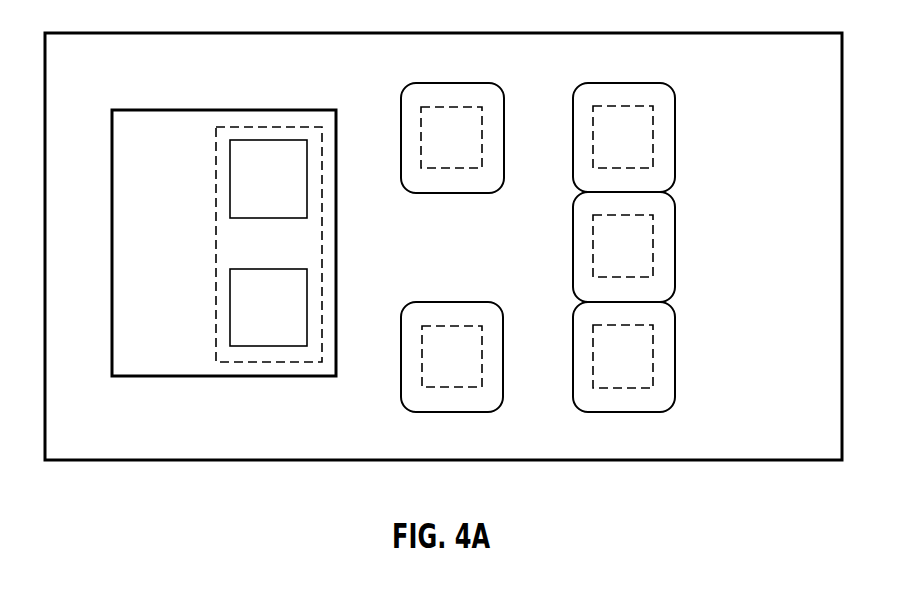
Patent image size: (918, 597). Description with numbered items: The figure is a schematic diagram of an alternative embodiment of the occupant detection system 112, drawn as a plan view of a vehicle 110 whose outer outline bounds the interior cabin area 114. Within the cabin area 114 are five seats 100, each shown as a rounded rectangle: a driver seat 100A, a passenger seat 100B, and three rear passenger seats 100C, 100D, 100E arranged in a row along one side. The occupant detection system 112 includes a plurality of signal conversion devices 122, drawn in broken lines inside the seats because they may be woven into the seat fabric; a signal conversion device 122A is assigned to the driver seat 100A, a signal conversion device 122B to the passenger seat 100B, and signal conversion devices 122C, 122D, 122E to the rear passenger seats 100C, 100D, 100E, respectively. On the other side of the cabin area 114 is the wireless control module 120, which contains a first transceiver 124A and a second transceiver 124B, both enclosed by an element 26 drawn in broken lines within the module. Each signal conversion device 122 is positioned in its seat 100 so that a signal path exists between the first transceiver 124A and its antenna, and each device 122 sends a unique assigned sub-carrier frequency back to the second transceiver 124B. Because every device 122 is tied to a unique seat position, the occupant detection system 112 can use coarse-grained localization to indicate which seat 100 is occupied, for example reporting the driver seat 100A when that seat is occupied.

The vehicle 110 is at (797, 33).
The interior cabin area 114 is at (236, 435).
The wireless control module 120 is at (165, 110).
The controller 26 is at (270, 127).
The first transceiver 124A is at (298, 194).
The second transceiver 124B is at (298, 323).
The seats 100 is at (392, 406).
The driver seat 100A is at (442, 412).
The passenger seat 100B is at (462, 83).
The rear passenger seat 100C is at (617, 412).
The rear passenger seat 100D is at (675, 247).
The rear passenger seat 100E is at (635, 83).
The occupant detection system 112 is at (491, 431).
The signal conversion devices 122 is at (478, 173).
The signal conversion device 122A is at (470, 326).
The signal conversion device 122B is at (445, 168).
The signal conversion device 122C is at (653, 345).
The signal conversion device 122D is at (653, 265).
The signal conversion device 122E is at (653, 127).